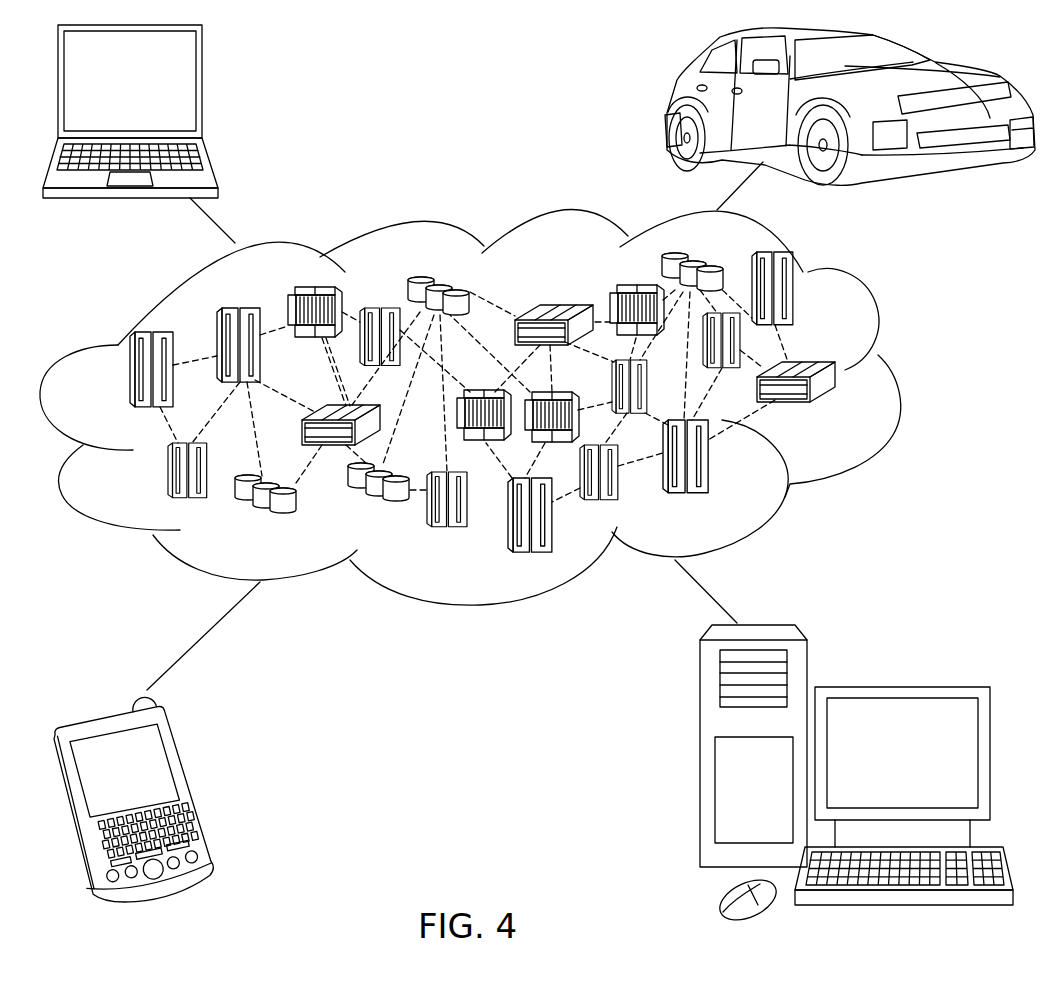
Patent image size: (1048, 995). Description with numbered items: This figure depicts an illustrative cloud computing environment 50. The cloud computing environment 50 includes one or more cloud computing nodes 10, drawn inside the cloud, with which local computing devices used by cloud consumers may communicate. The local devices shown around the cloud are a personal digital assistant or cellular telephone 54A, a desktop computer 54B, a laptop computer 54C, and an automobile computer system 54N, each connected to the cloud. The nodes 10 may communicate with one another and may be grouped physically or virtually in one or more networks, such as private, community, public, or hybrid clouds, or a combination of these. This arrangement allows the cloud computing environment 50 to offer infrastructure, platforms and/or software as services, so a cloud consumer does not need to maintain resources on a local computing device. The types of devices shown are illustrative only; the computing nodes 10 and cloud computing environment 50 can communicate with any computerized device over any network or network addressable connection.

The cloud computing node 10 is at (838, 410).
The cloud computing environment 50 is at (903, 378).
The personal digital assistant or cellular telephone 54A is at (190, 785).
The desktop computer 54B is at (900, 686).
The laptop computer 54C is at (202, 90).
The automobile computer system 54N is at (668, 112).